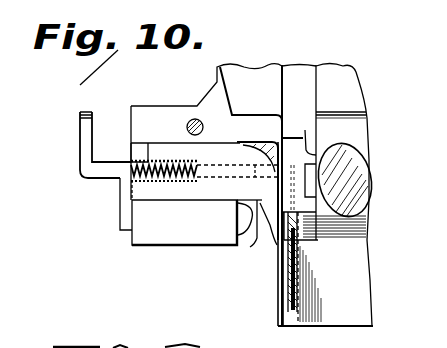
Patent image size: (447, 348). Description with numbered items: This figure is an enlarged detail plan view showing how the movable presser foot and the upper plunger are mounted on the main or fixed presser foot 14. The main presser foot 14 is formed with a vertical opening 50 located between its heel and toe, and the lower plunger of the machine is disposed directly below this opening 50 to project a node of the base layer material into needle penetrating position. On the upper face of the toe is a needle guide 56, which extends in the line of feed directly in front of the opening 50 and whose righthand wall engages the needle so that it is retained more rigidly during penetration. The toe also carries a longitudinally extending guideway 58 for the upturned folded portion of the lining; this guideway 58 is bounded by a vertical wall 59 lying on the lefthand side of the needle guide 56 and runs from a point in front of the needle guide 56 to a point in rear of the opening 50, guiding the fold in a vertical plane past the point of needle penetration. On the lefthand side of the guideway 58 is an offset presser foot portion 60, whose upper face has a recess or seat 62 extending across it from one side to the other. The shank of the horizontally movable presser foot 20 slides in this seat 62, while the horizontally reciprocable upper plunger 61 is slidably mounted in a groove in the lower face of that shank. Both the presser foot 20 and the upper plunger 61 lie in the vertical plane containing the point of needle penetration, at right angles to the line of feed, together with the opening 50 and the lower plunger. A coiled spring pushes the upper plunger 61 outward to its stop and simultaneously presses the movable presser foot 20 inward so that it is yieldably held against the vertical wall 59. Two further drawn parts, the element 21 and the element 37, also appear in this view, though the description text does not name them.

The main presser foot 14 is at (350, 269).
The movable presser foot 20 is at (187, 188).
The base 21 is at (292, 296).
The pin 37 is at (290, 234).
The vertical opening 50 is at (291, 156).
The needle guide 56 is at (280, 243).
The guideway 58 is at (280, 240).
The vertical wall 59 is at (283, 295).
The offset presser foot portion 60 is at (143, 240).
The upper plunger 61 is at (113, 162).
The recess or seat 62 is at (217, 230).